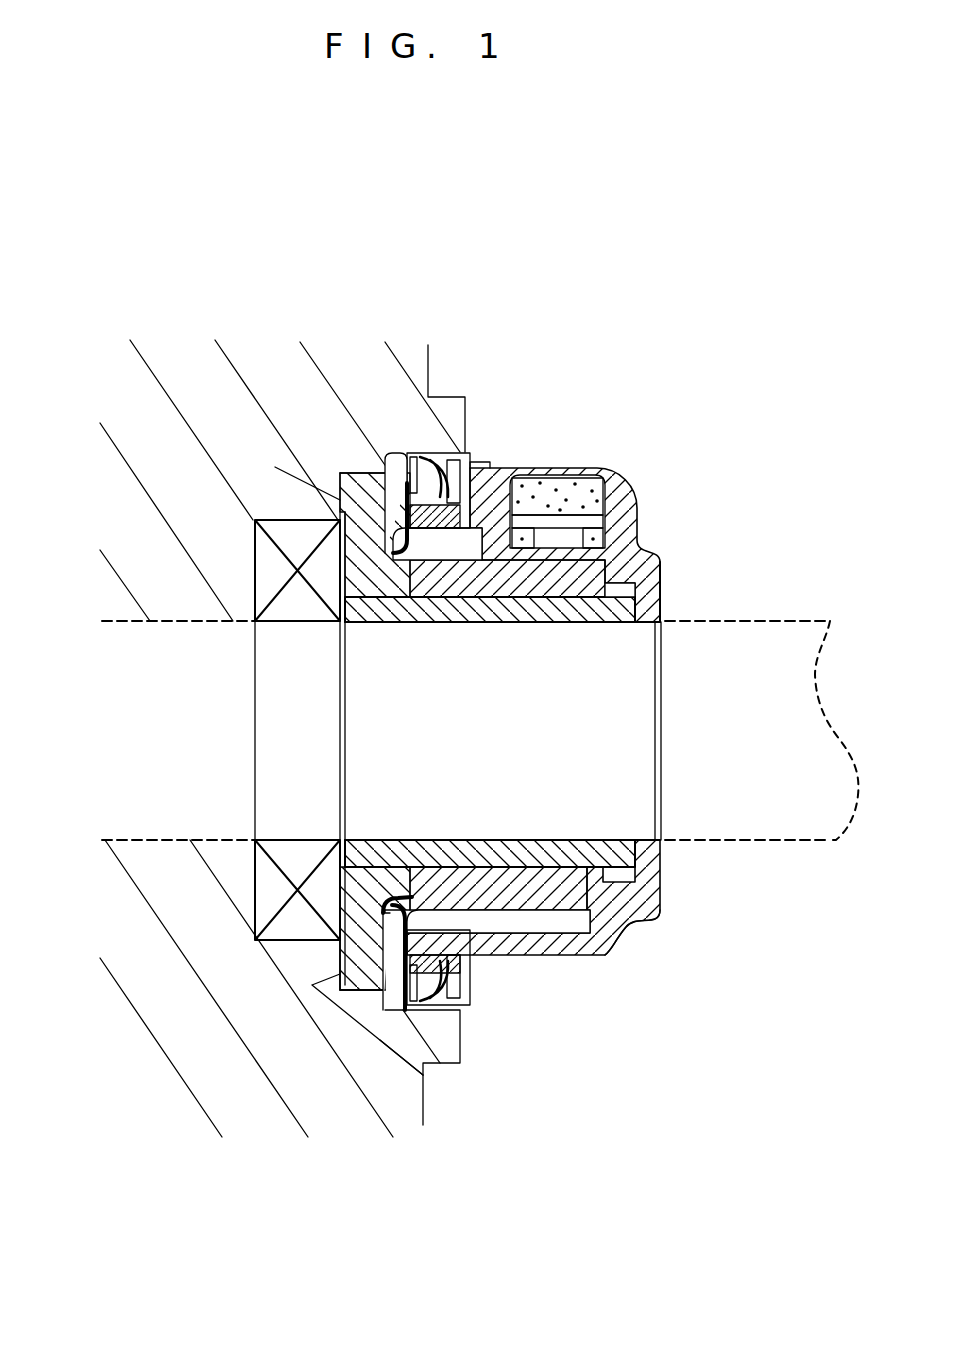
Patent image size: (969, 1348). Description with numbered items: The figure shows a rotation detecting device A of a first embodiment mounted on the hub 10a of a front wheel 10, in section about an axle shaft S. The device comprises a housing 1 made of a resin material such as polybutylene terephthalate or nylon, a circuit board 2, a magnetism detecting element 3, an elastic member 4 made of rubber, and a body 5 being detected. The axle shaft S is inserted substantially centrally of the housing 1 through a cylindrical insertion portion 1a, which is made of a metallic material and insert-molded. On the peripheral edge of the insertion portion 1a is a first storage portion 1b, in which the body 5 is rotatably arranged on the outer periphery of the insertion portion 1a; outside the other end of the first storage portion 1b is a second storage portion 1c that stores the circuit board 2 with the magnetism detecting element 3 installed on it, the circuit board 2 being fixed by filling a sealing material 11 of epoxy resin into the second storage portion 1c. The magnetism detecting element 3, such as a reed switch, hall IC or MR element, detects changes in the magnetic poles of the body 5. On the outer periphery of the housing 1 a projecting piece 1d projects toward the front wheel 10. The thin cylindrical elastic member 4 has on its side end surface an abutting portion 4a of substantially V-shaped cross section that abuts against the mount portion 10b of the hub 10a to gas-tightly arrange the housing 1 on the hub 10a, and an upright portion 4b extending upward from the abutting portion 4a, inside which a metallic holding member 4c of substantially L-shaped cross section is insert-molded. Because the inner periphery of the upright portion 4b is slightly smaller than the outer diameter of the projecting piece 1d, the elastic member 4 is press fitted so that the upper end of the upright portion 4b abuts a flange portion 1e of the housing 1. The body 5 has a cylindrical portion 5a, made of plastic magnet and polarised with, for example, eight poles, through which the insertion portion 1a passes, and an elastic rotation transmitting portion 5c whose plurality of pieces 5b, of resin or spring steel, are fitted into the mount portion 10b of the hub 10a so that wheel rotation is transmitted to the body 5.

The housing 1 is at (647, 563).
The insertion portion 1a is at (663, 615).
The first storage portion 1b is at (577, 922).
The second storage portion 1c is at (595, 498).
The projecting piece 1d is at (436, 535).
The flange portion 1e is at (477, 530).
The circuit board 2 is at (598, 520).
The magnetism detecting element 3 is at (570, 540).
The elastic member 4 is at (465, 452).
The abutting portion 4a is at (433, 1020).
The upright portion 4b is at (482, 975).
The holding member 4c is at (480, 1003).
The body being detected 5 is at (477, 540).
The cylindrical portion 5a is at (530, 586).
The pieces 5b is at (425, 1073).
The elastic rotation transmitting portion 5c is at (390, 850).
The front wheel 10 is at (306, 700).
The hub 10a is at (443, 405).
The mount portion 10b is at (275, 467).
The sealing material 11 is at (572, 483).
The rotation detecting device A is at (703, 508).
The axle shaft S is at (806, 686).